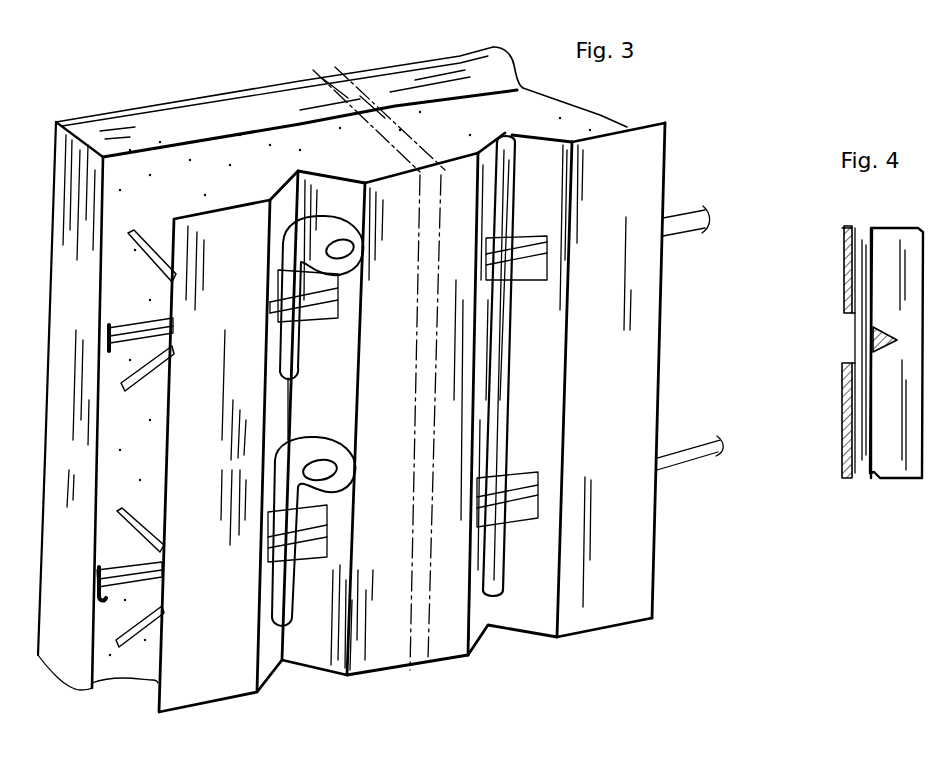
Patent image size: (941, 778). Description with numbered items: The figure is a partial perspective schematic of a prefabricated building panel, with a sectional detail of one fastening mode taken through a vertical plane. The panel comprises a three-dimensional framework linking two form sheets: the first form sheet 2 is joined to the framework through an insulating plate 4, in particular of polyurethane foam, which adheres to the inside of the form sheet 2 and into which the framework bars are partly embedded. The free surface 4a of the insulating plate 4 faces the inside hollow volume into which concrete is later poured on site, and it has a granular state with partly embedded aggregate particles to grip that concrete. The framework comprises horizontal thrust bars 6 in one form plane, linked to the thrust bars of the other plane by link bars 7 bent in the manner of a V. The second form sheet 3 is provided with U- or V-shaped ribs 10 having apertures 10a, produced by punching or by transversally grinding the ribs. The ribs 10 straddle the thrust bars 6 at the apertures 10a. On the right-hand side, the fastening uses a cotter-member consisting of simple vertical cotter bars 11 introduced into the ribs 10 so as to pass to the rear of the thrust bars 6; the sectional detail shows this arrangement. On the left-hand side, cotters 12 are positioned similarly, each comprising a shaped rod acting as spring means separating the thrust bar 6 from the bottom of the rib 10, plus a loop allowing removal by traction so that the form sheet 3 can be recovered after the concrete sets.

In FIG. 3, the form sheet 2 is at (103, 112).
In FIG. 3, the second form sheet 3 is at (656, 172).
In FIG. 4, the second form sheet 3 is at (842, 417).
In FIG. 3, the insulating plate 4 is at (180, 127).
In FIG. 3, the free surface 4a is at (334, 120).
In FIG. 3, the thrust bar 6 is at (140, 328).
In FIG. 4, the thrust bar 6 is at (885, 330).
In FIG. 3, the link bar 7 is at (152, 256).
In FIG. 3, the rib 10 is at (345, 182).
In FIG. 4, the rib 10 is at (895, 467).
In FIG. 3, the aperture 10a is at (322, 310).
In FIG. 4, the aperture 10a is at (852, 327).
In FIG. 3, the cotter bar 11 is at (503, 391).
In FIG. 4, the cotter bar 11 is at (880, 230).
In FIG. 3, the cotter 12 is at (298, 378).